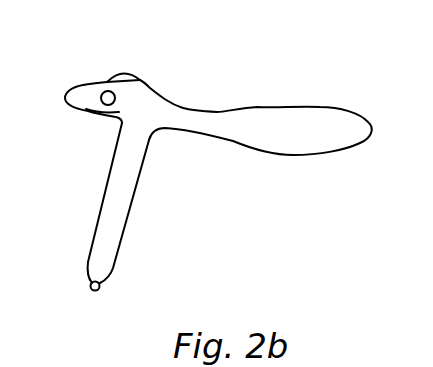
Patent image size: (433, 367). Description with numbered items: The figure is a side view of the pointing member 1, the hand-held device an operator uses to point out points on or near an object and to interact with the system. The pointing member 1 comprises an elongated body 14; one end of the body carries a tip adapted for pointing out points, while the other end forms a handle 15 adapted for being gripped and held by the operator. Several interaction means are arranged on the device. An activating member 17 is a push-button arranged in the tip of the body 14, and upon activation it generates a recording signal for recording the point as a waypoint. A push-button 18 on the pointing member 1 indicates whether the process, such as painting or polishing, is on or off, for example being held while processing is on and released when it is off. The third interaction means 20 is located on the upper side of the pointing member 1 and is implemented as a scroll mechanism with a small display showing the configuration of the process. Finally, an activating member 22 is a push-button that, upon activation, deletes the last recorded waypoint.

The pointing member 1 is at (229, 73).
The elongated body 14 is at (110, 191).
The handle 15 is at (257, 107).
The activating member 17 is at (103, 288).
The push-button 18 is at (95, 115).
The third interaction means 20 is at (129, 73).
The activating member 22 is at (102, 93).